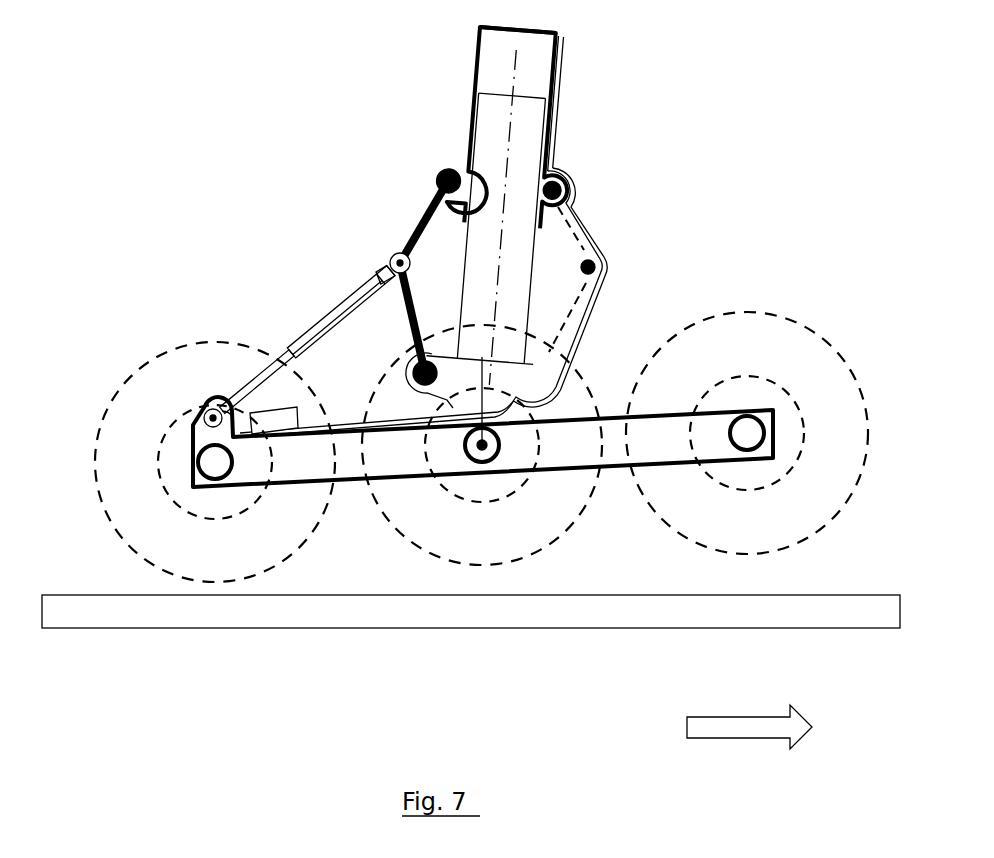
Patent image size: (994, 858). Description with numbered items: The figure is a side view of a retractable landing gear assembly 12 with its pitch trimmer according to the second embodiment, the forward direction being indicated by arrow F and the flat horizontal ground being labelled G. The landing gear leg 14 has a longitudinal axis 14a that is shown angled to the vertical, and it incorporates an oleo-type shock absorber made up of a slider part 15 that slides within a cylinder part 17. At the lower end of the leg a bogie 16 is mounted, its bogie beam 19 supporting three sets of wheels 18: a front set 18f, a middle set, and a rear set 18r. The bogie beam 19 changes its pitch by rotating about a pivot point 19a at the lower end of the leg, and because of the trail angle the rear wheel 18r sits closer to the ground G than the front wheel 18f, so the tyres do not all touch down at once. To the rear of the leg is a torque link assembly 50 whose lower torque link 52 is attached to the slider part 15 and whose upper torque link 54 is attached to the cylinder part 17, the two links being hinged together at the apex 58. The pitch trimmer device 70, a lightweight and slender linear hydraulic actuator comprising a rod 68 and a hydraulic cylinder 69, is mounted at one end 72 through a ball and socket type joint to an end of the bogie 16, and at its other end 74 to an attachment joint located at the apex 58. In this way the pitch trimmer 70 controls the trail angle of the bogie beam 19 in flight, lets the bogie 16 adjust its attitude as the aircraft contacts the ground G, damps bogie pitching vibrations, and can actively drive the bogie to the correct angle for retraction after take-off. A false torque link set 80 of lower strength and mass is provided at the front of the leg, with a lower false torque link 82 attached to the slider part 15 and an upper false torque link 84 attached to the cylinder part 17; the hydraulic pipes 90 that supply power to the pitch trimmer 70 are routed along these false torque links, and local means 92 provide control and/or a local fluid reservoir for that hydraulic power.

The landing gear assembly 12 is at (215, 159).
The landing gear leg 14 is at (468, 157).
The longitudinal axis of the landing gear leg 14a is at (507, 127).
The slider part 15 is at (515, 272).
The bogie 16 is at (348, 468).
The cylinder part 17 is at (538, 60).
The wheels 18 is at (487, 553).
The rear wheel 18r is at (143, 561).
The front wheel 18f is at (830, 352).
The bogie beam 19 is at (612, 448).
The pivot point 19a is at (482, 448).
The torque link assembly 50 is at (424, 214).
The lower torque link 52 is at (407, 312).
The upper torque link 54 is at (427, 181).
The apex 58 is at (392, 258).
The rod 68 is at (262, 366).
The hydraulic cylinder 69 is at (322, 321).
The pitch trimmer device 70 is at (332, 318).
The one end of the pitch trimmer device 72 is at (212, 402).
The other end of the pitch trimmer device 74 is at (390, 252).
The false torque link set 80 is at (583, 240).
The lower false torque link 82 is at (583, 308).
The upper false torque link 84 is at (578, 208).
The hydraulic pipes 90 is at (565, 108).
The local means 92 is at (281, 430).
The forward direction arrow F is at (722, 726).
The ground G is at (280, 620).